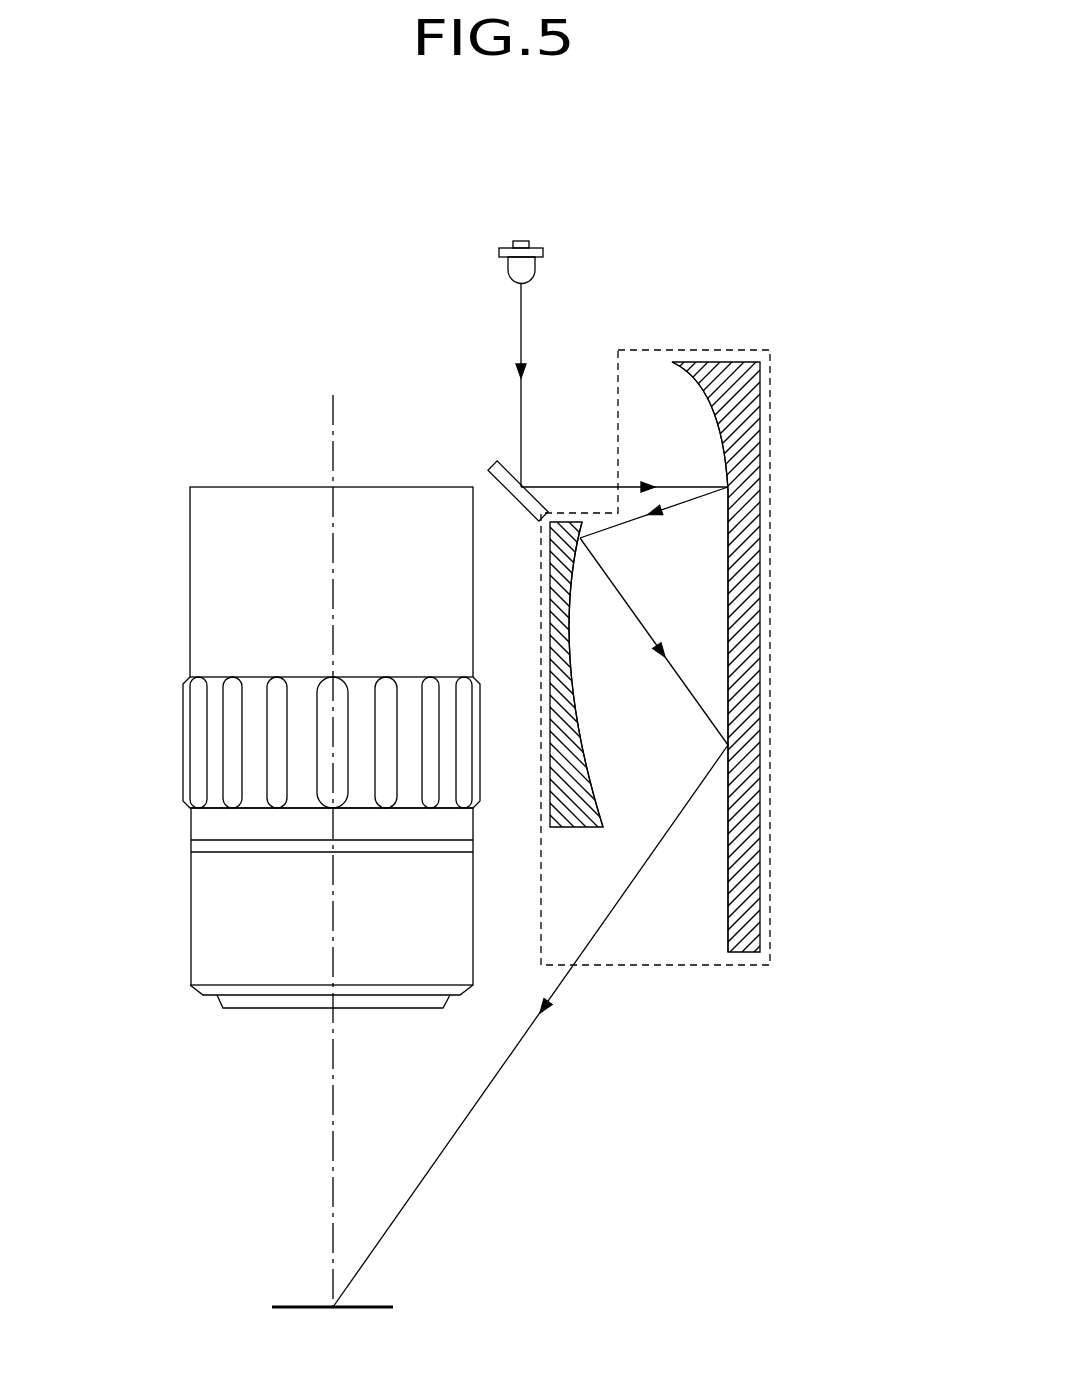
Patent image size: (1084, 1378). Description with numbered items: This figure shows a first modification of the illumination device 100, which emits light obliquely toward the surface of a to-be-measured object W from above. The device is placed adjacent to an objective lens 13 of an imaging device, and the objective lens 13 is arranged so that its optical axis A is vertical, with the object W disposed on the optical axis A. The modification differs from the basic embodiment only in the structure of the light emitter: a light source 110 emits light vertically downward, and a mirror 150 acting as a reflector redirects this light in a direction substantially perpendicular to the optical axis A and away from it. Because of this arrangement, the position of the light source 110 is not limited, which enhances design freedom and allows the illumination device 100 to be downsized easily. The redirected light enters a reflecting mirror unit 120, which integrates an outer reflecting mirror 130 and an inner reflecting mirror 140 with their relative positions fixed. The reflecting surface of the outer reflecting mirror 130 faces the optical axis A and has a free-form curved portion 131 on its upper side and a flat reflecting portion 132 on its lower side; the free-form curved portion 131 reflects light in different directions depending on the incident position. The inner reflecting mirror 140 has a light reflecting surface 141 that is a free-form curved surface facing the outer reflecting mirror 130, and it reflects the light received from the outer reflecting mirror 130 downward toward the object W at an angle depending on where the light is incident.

The objective lens 13 is at (205, 537).
The illumination device 100 is at (757, 262).
The light source 110 is at (535, 272).
The reflecting mirror unit 120 is at (770, 440).
The outer reflecting mirror 130 is at (755, 578).
The free-form curved portion 131 is at (697, 406).
The flat reflecting portion 132 is at (730, 898).
The inner reflecting mirror 140 is at (570, 827).
The light reflecting surface 141 is at (596, 800).
The mirror 150 is at (495, 463).
The optical axis A is at (335, 830).
The to-be-measured object W is at (383, 1305).